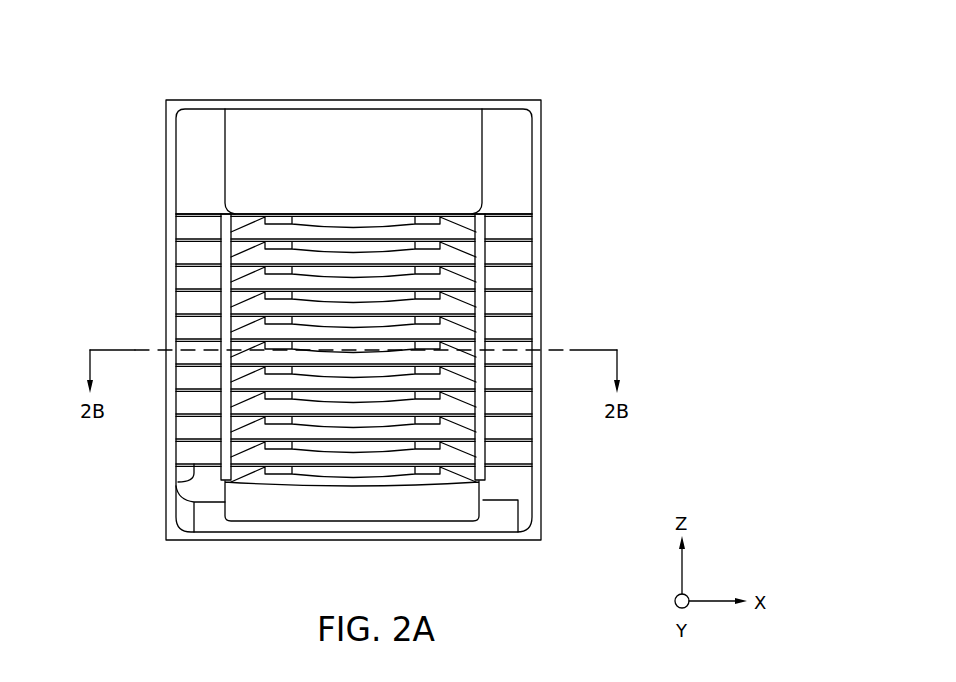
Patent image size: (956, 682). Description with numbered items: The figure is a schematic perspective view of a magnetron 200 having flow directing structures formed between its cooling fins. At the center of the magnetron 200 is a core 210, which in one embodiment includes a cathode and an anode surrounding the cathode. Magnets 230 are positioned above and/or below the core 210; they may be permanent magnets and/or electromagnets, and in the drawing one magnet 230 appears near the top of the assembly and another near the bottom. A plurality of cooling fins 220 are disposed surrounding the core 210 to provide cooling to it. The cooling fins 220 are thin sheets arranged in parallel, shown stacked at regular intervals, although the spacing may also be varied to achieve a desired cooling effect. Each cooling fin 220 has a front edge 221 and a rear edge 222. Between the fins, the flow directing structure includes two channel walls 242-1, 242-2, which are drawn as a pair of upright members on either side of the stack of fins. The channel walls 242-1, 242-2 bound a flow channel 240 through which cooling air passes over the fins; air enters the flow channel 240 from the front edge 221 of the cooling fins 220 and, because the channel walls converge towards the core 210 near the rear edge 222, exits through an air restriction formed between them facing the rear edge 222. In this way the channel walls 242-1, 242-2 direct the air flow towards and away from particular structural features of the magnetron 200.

The magnetron 200 is at (166, 54).
The core 210 is at (307, 474).
The cooling fin 220 is at (520, 227).
The front edge 221 is at (190, 489).
The rear edge 222 is at (503, 214).
The magnet 230 is at (483, 142).
The flow channel 240 is at (435, 331).
The channel wall 242-1 is at (222, 230).
The channel wall 242-2 is at (487, 230).